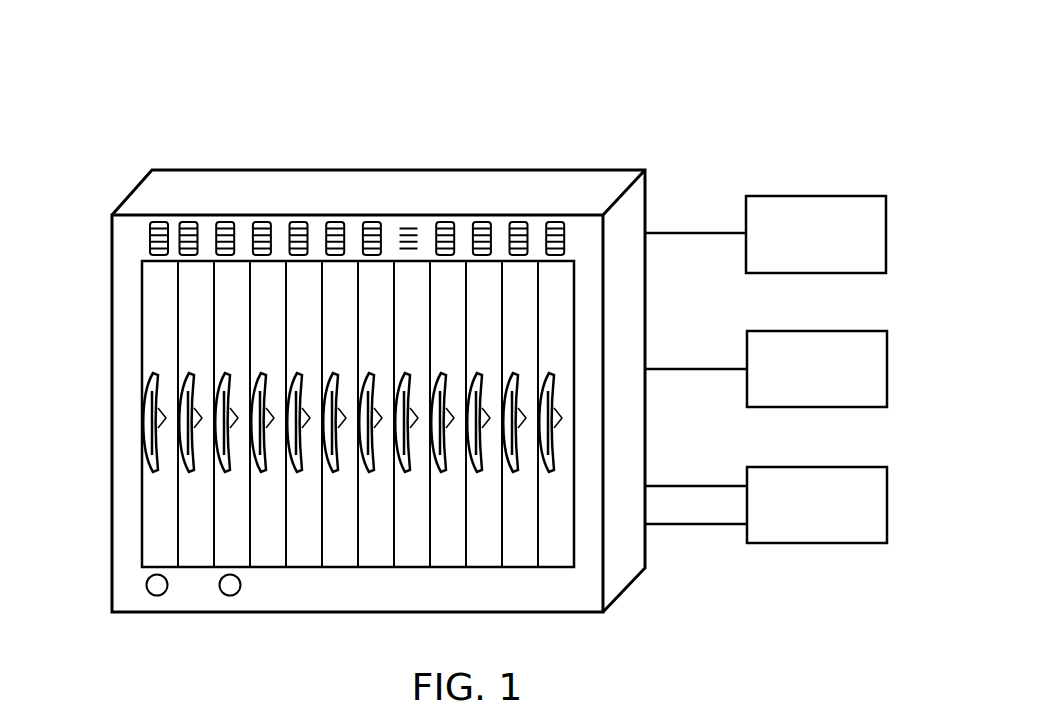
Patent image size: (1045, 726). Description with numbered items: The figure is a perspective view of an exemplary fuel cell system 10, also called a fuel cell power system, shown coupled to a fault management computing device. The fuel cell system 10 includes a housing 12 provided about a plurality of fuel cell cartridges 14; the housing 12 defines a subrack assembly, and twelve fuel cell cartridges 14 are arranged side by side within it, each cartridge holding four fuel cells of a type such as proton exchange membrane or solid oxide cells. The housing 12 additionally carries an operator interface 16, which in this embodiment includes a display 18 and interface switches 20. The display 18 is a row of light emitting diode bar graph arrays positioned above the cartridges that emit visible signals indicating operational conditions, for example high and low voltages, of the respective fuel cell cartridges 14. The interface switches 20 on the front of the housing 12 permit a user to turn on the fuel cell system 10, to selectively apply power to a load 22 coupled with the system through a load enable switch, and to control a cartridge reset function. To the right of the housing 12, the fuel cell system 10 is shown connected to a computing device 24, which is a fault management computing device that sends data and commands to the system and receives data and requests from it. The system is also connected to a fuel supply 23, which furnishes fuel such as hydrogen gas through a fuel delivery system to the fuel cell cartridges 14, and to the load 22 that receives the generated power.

The fuel cell system 10 is at (743, 77).
The housing 12 is at (657, 319).
The fuel cell cartridges 14 is at (372, 555).
The operator interface 16 is at (85, 263).
The display 18 is at (481, 222).
The interface switches 20 is at (233, 596).
The load 22 is at (888, 505).
The fuel supply 23 is at (888, 370).
The computing device 24 is at (887, 234).